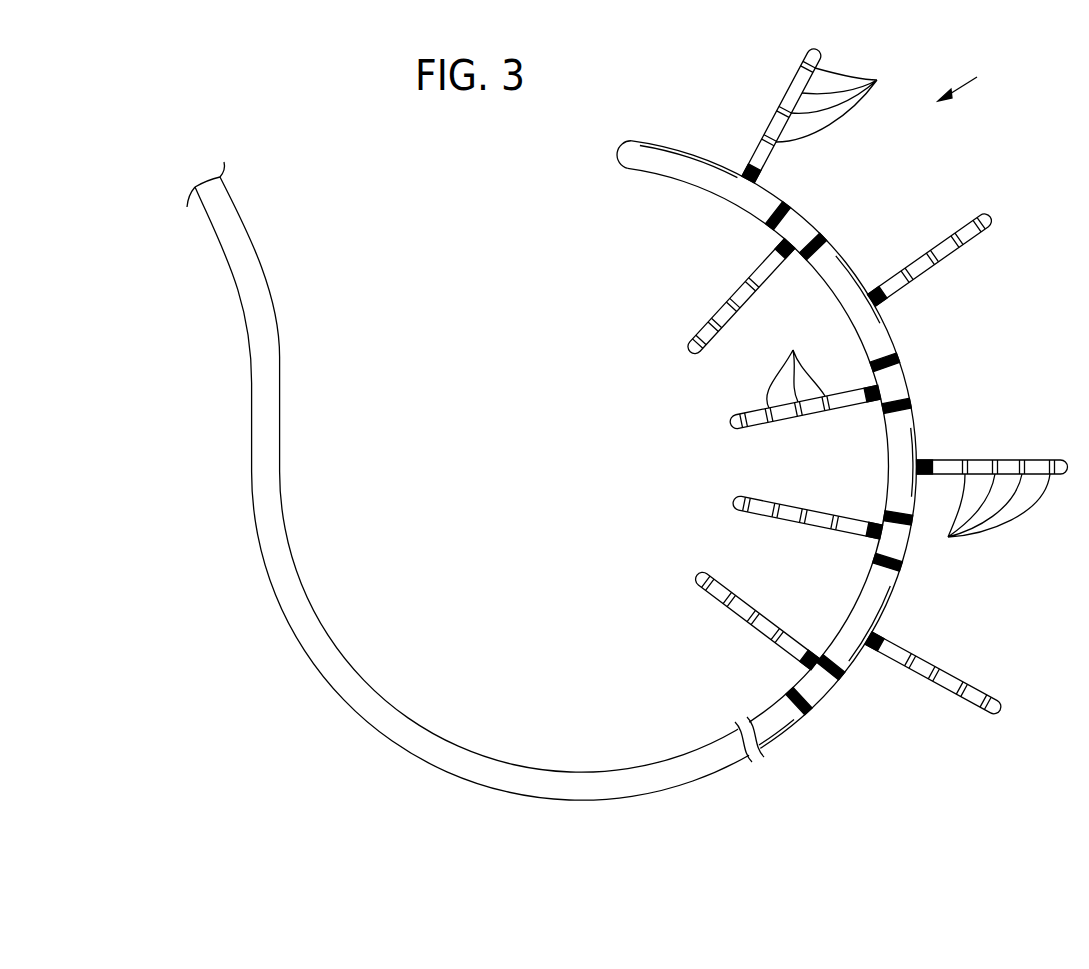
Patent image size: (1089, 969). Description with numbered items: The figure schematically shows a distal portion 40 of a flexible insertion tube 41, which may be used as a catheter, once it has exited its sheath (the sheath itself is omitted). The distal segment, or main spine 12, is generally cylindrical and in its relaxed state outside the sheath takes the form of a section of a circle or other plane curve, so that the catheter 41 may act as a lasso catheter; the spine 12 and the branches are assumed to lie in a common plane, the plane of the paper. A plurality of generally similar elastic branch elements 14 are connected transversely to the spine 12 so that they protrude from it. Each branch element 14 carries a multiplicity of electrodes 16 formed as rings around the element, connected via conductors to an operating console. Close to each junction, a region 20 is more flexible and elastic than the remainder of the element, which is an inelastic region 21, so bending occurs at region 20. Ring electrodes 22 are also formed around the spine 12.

The distal segment 12 is at (551, 447).
The elastic branch elements 14 is at (788, 93).
The electrodes 16 is at (908, 317).
The region 20 is at (744, 163).
The inelastic region 21 is at (967, 250).
The ring electrodes 22 is at (810, 250).
The distal portion 40 is at (974, 79).
The flexible insertion tube 41 is at (573, 773).